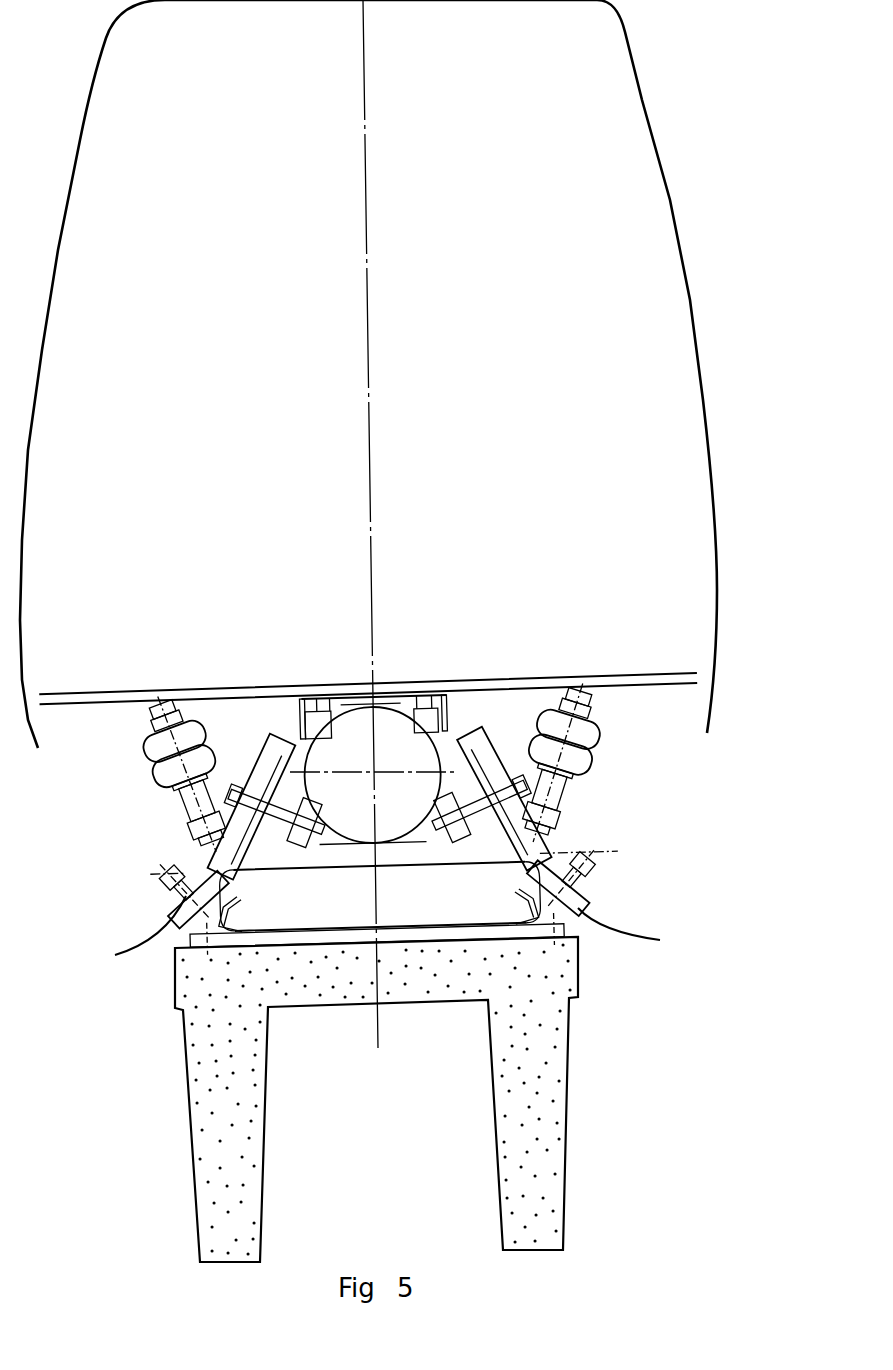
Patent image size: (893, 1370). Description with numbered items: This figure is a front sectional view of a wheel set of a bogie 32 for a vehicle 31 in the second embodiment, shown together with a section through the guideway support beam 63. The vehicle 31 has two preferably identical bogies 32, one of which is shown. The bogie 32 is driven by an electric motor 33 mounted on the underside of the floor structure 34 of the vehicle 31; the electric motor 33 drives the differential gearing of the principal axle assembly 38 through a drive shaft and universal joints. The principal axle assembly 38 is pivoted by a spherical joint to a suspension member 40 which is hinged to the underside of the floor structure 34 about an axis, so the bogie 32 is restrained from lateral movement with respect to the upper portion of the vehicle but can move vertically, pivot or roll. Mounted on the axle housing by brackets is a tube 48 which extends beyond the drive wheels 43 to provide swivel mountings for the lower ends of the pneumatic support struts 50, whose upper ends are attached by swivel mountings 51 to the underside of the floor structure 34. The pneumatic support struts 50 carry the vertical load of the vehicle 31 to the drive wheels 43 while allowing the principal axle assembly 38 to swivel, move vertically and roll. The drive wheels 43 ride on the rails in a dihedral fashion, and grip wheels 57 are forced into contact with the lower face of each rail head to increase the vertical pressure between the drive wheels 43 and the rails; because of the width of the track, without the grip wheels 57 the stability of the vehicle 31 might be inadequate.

The vehicle 31 is at (702, 378).
The bogie 32 is at (637, 825).
The electric motor 33 is at (407, 812).
The floor structure 34 is at (633, 673).
The principal axle assembly 38 is at (449, 698).
The suspension member 40 is at (318, 688).
The drive wheels 43 is at (277, 738).
The tube 48 is at (338, 860).
The pneumatic support struts 50 is at (150, 782).
The swivel mountings 51 is at (597, 704).
The grip wheel 57 is at (172, 922).
The guideway support beam 63 is at (540, 1116).